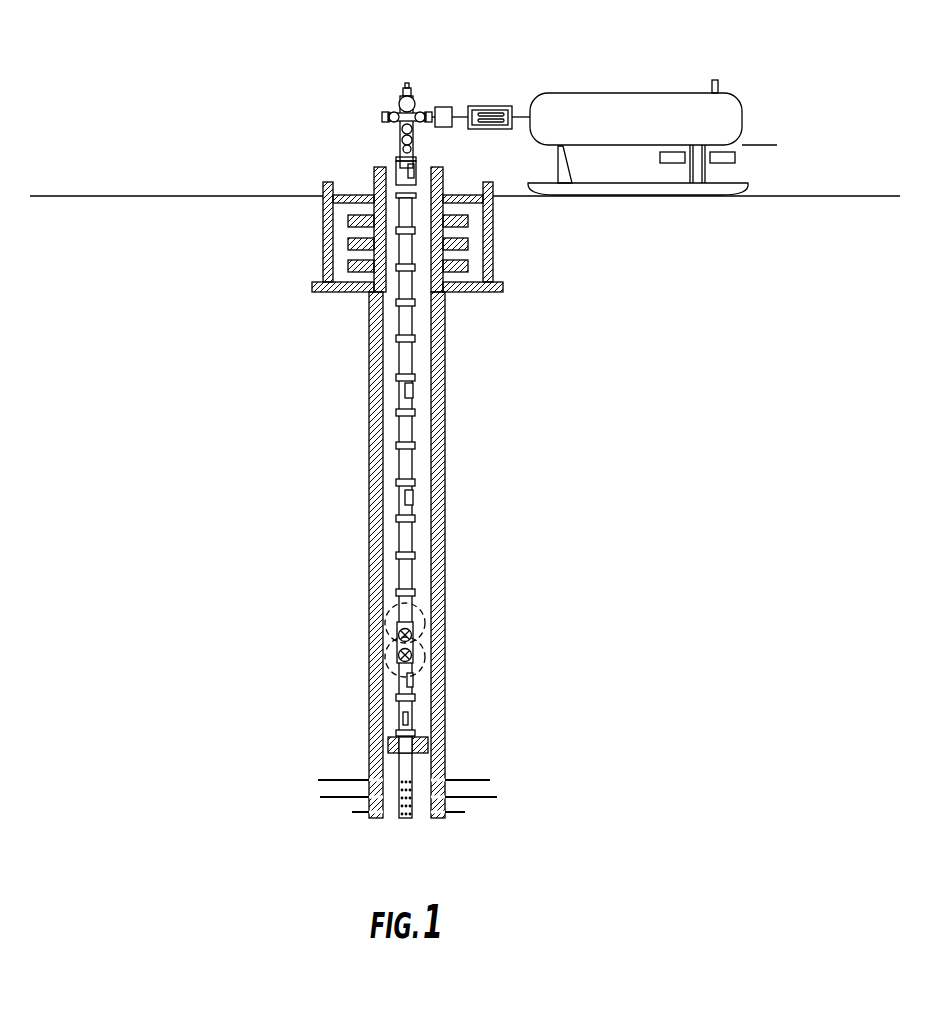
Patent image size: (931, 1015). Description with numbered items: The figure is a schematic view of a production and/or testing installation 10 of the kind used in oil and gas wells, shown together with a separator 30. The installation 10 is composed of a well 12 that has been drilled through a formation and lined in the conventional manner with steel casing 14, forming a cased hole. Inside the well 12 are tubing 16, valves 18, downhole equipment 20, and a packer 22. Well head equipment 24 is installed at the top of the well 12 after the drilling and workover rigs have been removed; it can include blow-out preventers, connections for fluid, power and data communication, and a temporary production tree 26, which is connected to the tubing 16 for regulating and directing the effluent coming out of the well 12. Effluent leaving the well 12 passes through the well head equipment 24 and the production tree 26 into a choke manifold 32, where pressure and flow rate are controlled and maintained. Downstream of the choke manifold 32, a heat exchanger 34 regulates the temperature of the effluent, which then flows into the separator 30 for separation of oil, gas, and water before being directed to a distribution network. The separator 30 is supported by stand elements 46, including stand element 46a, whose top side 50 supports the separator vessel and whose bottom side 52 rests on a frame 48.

The production and/or testing installation 10 is at (348, 142).
The well 12 is at (498, 346).
The steel casing 14 is at (434, 388).
The tubing 16 is at (420, 322).
The valves 18 is at (421, 632).
The downhole equipment 20 is at (449, 658).
The packer 22 is at (432, 747).
The well head equipment 24 is at (311, 248).
The production tree 26 is at (420, 96).
The separator 30 is at (613, 91).
The choke manifold 32 is at (446, 102).
The heat exchanger 34 is at (508, 102).
The stand elements 46 is at (651, 166).
The stand element 46a is at (544, 164).
The frame 48 is at (760, 187).
The top side 50 is at (571, 152).
The bottom side 52 is at (564, 184).